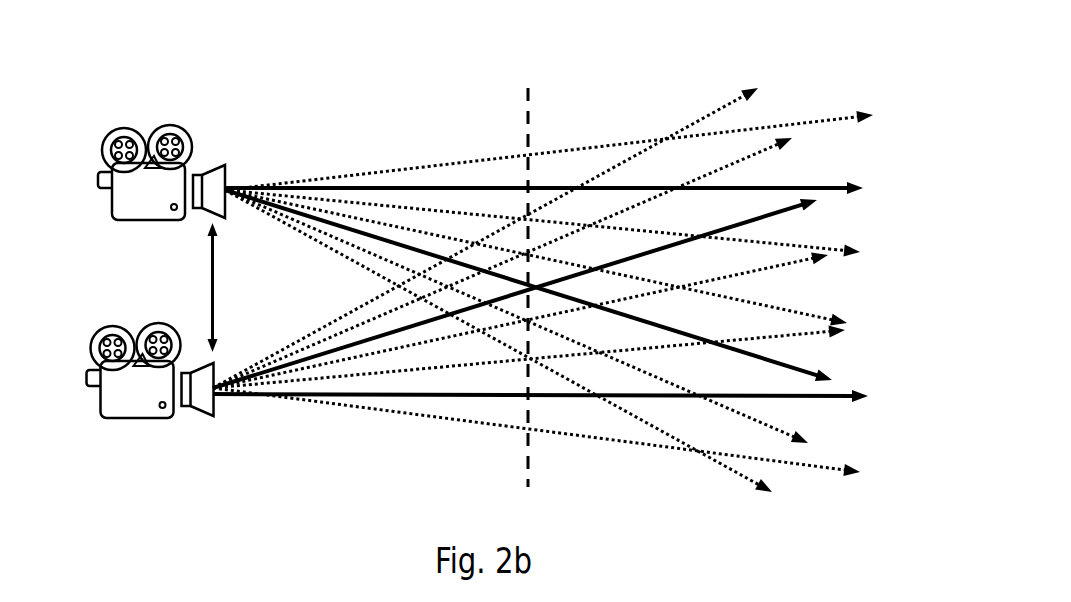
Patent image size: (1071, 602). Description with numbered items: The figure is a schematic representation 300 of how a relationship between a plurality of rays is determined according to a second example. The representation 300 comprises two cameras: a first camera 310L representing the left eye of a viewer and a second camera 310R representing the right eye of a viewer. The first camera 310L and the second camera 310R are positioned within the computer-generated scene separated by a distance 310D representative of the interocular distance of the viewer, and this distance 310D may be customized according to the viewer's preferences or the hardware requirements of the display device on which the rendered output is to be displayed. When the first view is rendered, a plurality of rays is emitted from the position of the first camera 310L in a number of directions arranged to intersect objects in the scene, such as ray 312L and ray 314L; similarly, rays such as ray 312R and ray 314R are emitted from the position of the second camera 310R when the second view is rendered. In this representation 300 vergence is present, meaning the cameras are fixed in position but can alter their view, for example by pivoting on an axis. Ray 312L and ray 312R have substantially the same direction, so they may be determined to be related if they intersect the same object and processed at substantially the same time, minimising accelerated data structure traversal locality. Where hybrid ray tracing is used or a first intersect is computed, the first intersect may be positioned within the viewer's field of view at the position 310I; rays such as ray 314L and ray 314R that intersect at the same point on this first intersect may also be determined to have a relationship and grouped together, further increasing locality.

The representation 300 is at (306, 55).
The first camera 310L is at (180, 122).
The second camera 310R is at (172, 315).
The distance 310D is at (258, 287).
The first intersect position 310I is at (528, 103).
The ray 312L is at (823, 183).
The ray 312R is at (790, 398).
The ray 314L is at (817, 375).
The ray 314R is at (782, 213).